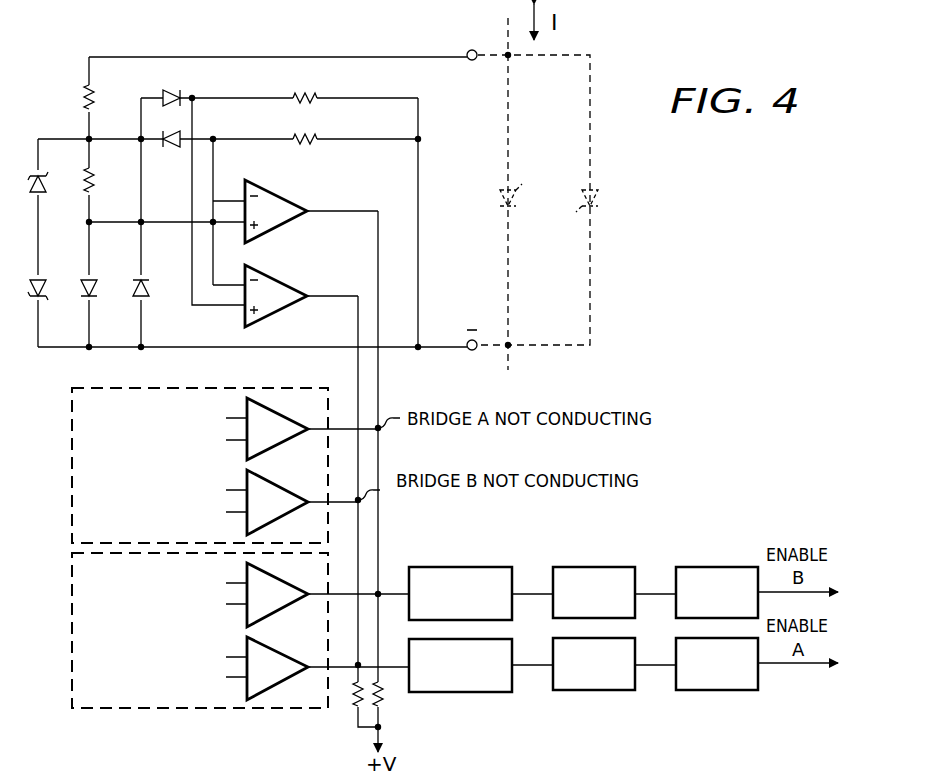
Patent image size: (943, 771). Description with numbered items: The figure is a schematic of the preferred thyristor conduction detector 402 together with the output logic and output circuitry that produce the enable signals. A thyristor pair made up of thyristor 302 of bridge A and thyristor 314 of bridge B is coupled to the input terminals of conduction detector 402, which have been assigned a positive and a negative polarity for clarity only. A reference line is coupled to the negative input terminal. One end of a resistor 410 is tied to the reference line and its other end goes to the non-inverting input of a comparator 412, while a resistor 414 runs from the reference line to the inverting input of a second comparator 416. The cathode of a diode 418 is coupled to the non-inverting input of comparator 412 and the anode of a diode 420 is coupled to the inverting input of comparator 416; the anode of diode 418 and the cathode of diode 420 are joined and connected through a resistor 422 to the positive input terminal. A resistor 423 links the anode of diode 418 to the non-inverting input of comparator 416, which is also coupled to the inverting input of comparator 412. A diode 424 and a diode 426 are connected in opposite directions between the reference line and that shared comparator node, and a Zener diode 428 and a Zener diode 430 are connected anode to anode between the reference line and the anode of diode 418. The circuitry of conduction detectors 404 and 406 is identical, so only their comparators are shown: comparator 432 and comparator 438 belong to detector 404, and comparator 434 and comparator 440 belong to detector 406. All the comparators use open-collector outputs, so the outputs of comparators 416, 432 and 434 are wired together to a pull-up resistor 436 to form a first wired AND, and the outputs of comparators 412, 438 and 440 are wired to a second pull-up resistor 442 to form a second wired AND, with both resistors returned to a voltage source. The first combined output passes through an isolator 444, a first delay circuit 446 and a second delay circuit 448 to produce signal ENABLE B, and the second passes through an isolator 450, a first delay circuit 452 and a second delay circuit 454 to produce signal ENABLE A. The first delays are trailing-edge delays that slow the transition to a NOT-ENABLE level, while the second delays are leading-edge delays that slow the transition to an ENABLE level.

The thyristor conduction detector 402 is at (96, 28).
The resistor 422 is at (86, 96).
The diode 418 is at (166, 96).
The diode 420 is at (172, 148).
The resistor 410 is at (314, 98).
The resistor 414 is at (320, 138).
The resistor 423 is at (96, 193).
The Zener diode 430 is at (44, 188).
The Zener diode 428 is at (42, 300).
The diode 426 is at (94, 300).
The diode 424 is at (146, 300).
The comparator 416 is at (292, 228).
The comparator 412 is at (292, 276).
The thyristor 302 is at (494, 182).
The thyristor 314 is at (598, 182).
The conduction detector 404 is at (122, 430).
The conduction detector 406 is at (122, 595).
The comparator 432 is at (238, 414).
The comparator 438 is at (238, 486).
The comparator 434 is at (238, 579).
The comparator 440 is at (232, 650).
The second pull-up resistor 442 is at (354, 704).
The pull-up resistor 436 is at (386, 704).
The isolator 444 is at (473, 566).
The isolator 450 is at (478, 692).
The first delay circuit 446 is at (595, 566).
The first delay circuit 452 is at (598, 692).
The second delay circuit 448 is at (718, 566).
The second delay circuit 454 is at (718, 692).